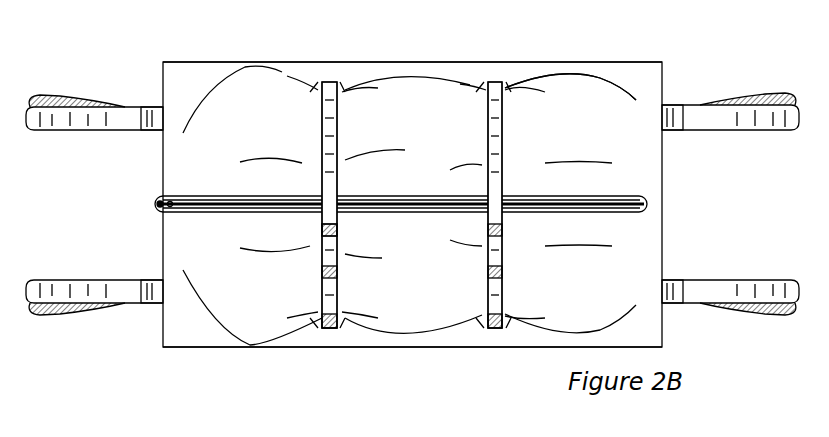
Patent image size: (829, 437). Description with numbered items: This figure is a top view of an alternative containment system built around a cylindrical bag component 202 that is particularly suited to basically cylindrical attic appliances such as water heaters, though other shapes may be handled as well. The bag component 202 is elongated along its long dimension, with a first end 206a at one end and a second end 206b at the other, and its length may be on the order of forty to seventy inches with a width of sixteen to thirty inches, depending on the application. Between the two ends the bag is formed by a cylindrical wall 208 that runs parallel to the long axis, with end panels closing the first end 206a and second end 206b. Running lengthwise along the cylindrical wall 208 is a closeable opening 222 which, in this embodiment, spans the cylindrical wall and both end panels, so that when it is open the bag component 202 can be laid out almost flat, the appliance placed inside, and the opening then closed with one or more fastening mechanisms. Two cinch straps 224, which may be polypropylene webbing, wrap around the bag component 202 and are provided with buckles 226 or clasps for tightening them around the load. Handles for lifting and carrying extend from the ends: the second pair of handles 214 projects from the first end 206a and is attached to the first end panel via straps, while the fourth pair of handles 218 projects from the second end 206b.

The cylindrical bag component 202 is at (418, 349).
The first end 206a is at (191, 354).
The second end 206b is at (627, 57).
The cylindrical wall 208 is at (570, 93).
The second pair of handles 214 is at (37, 129).
The fourth pair of handles 218 is at (758, 133).
The closeable opening 222 is at (447, 200).
The cinch straps 224 is at (327, 150).
The buckles 226 is at (332, 232).